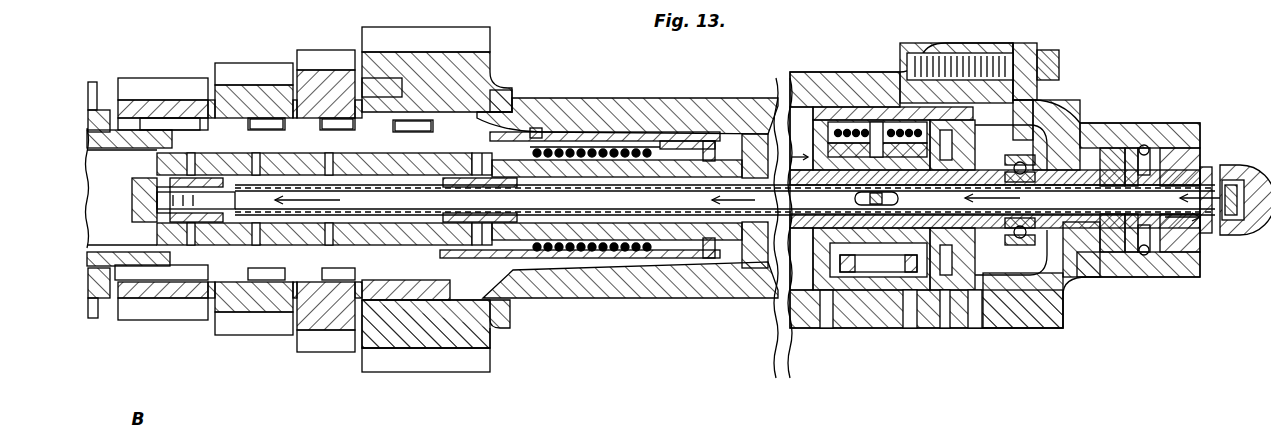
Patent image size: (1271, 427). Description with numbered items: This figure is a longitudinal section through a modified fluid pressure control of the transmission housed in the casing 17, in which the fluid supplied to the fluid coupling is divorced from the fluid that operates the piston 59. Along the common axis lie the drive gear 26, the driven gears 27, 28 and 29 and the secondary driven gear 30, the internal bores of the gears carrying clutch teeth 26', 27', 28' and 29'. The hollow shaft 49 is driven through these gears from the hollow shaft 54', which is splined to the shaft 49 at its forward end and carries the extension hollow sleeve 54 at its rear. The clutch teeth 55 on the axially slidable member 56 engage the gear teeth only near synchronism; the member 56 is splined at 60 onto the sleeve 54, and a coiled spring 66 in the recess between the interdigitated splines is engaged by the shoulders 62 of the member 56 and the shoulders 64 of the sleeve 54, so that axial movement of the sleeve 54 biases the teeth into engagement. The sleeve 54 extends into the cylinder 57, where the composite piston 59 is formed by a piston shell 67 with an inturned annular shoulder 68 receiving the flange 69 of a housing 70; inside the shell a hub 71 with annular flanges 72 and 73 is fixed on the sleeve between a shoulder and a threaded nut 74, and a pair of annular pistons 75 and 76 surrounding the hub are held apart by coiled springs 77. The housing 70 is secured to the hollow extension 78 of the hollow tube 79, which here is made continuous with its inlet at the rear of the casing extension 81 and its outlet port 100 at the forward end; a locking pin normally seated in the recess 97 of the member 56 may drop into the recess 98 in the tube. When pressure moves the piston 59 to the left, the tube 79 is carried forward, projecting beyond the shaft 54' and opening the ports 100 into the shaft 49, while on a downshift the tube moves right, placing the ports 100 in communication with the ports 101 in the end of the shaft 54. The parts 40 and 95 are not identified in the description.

The casing 17 is at (1065, 332).
The drive gear 26 is at (437, 56).
The clutch teeth 26' is at (399, 133).
The driven gear 27 is at (326, 67).
The clutch teeth 27' is at (328, 132).
The driven gear 28 is at (254, 73).
The clutch teeth 28' is at (248, 130).
The driven gear 29 is at (163, 77).
The clutch teeth 29' is at (170, 131).
The secondary driven gear 30 is at (97, 82).
The casing 40 is at (720, 106).
The hollow shaft 49 is at (133, 150).
The extension hollow sleeve 54 is at (630, 299).
The hollow shaft 54' is at (168, 304).
The clutch teeth 55 is at (516, 110).
The axially slidable member 56 is at (602, 148).
The cylinder 57 is at (808, 98).
The piston 59 is at (799, 138).
The spline 60 is at (688, 136).
The shoulders 62 is at (650, 160).
The shoulders 64 is at (556, 138).
The coiled spring 66 is at (598, 262).
The piston shell 67 is at (876, 295).
The inturned annular shoulder 68 is at (790, 280).
The flange 69 is at (935, 315).
The housing 70 is at (1005, 295).
The hub 71 is at (790, 275).
The annular flange 72 is at (810, 270).
The annular flange 73 is at (982, 315).
The threaded nut 74 is at (1040, 118).
The annular piston 75 is at (848, 292).
The annular piston 76 is at (919, 305).
The coiled springs 77 is at (895, 75).
The hollow extension 78 is at (1035, 240).
The hollow tube 79 is at (755, 240).
The casing extension 81 is at (1233, 172).
The hub 95 is at (486, 182).
The recess 97 is at (538, 128).
The recess 98 is at (498, 190).
The outlet port 100 is at (153, 222).
The ports 101 is at (150, 272).